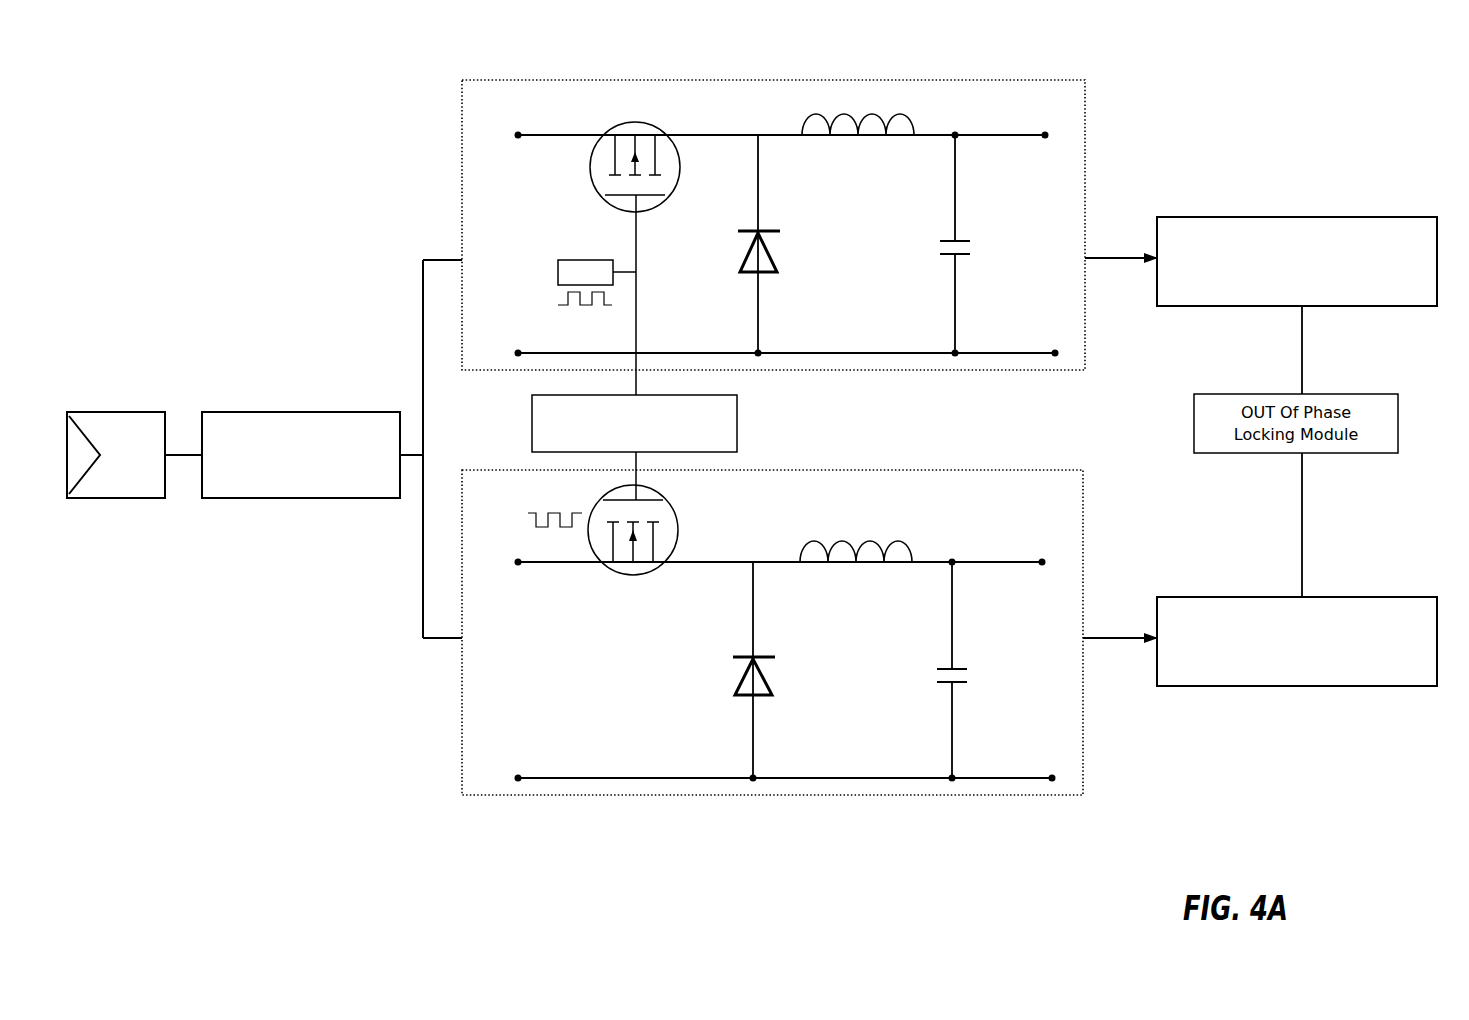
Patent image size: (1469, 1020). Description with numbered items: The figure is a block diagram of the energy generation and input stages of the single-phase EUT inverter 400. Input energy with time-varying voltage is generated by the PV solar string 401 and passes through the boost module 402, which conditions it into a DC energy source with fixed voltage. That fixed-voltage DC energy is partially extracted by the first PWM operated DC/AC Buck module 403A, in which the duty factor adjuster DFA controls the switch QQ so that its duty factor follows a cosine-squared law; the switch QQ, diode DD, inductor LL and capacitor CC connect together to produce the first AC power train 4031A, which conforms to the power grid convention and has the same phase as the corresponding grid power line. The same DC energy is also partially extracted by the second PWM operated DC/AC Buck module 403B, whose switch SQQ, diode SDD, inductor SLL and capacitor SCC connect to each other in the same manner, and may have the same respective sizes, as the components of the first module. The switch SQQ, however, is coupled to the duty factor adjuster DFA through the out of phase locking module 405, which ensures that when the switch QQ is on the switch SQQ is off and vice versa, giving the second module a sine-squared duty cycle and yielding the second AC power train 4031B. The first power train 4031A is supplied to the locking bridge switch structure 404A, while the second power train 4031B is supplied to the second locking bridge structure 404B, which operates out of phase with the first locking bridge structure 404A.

The single-phase EUT inverter 400 is at (710, 25).
The PV solar string 401 is at (130, 470).
The boost module 402 is at (316, 464).
The first PWM operated DC/AC Buck module 403A is at (775, 105).
The second PWM operated DC/AC Buck module 403B is at (770, 518).
The locking bridge switch structure 404A is at (1322, 270).
The second locking bridge structure 404B is at (1322, 650).
The out of phase locking module 405 is at (737, 418).
The first AC power train 4031A is at (1118, 262).
The second AC power train 4031B is at (1118, 642).
The switch QQ is at (672, 192).
The diode DD is at (743, 273).
The inductor LL is at (852, 150).
The capacitor CC is at (938, 253).
The duty factor adjuster DFA is at (597, 282).
The switch SQQ is at (640, 573).
The diode SDD is at (740, 698).
The inductor SLL is at (850, 577).
The capacitor SCC is at (937, 685).